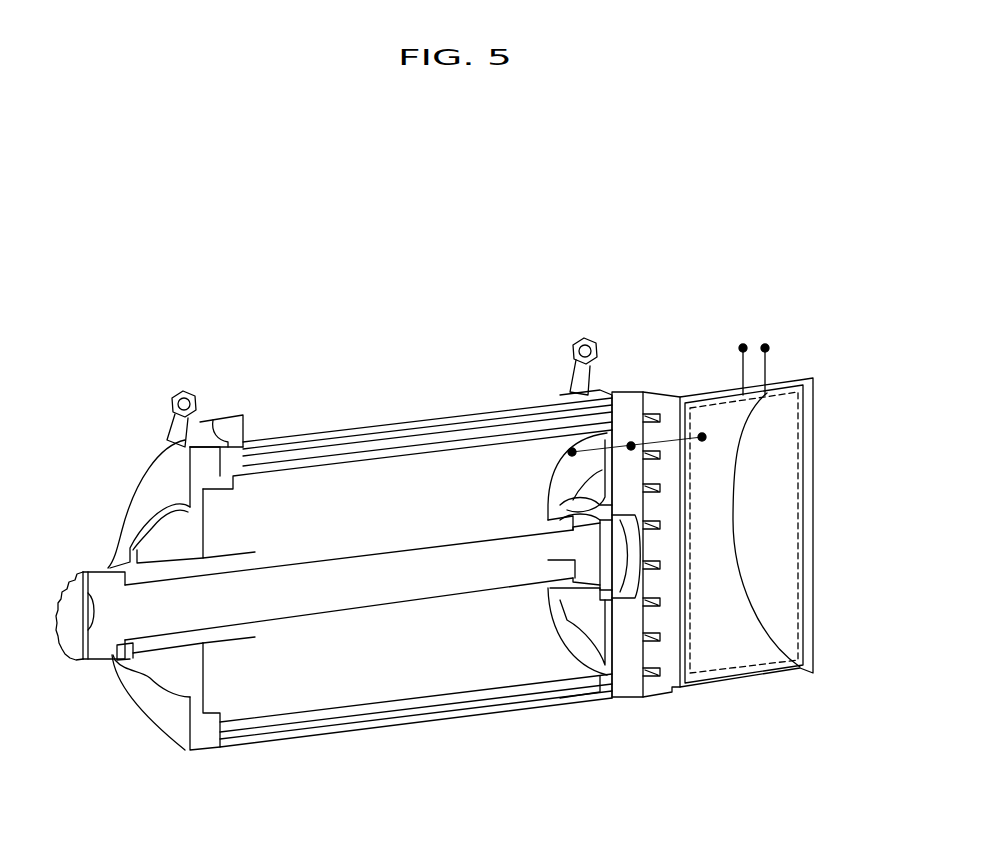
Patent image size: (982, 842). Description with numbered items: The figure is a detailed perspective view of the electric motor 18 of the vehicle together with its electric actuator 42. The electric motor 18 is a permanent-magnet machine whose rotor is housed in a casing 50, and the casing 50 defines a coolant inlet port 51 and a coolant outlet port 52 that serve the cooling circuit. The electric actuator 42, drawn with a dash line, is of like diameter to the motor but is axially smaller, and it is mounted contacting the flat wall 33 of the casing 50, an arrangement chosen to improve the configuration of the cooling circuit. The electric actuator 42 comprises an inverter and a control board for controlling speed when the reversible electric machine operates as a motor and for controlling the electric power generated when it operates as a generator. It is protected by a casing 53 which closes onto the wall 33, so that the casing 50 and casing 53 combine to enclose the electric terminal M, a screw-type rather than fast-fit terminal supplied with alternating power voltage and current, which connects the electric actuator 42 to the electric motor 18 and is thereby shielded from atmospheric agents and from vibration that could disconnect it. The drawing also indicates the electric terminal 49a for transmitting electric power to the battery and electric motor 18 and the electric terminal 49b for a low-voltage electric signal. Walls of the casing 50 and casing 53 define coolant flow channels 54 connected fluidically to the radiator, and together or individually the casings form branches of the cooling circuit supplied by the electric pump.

The electric motor 18 is at (98, 625).
The flat wall 33 is at (630, 660).
The electric actuator 42 is at (767, 518).
The electric terminal 49a is at (767, 360).
The electric terminal 49b is at (743, 370).
The casing 50 is at (418, 423).
The coolant inlet port 51 is at (192, 397).
The coolant outlet port 52 is at (572, 360).
The casing 53 is at (797, 377).
The coolant flow channels 54 is at (325, 427).
The electric terminal M is at (630, 398).